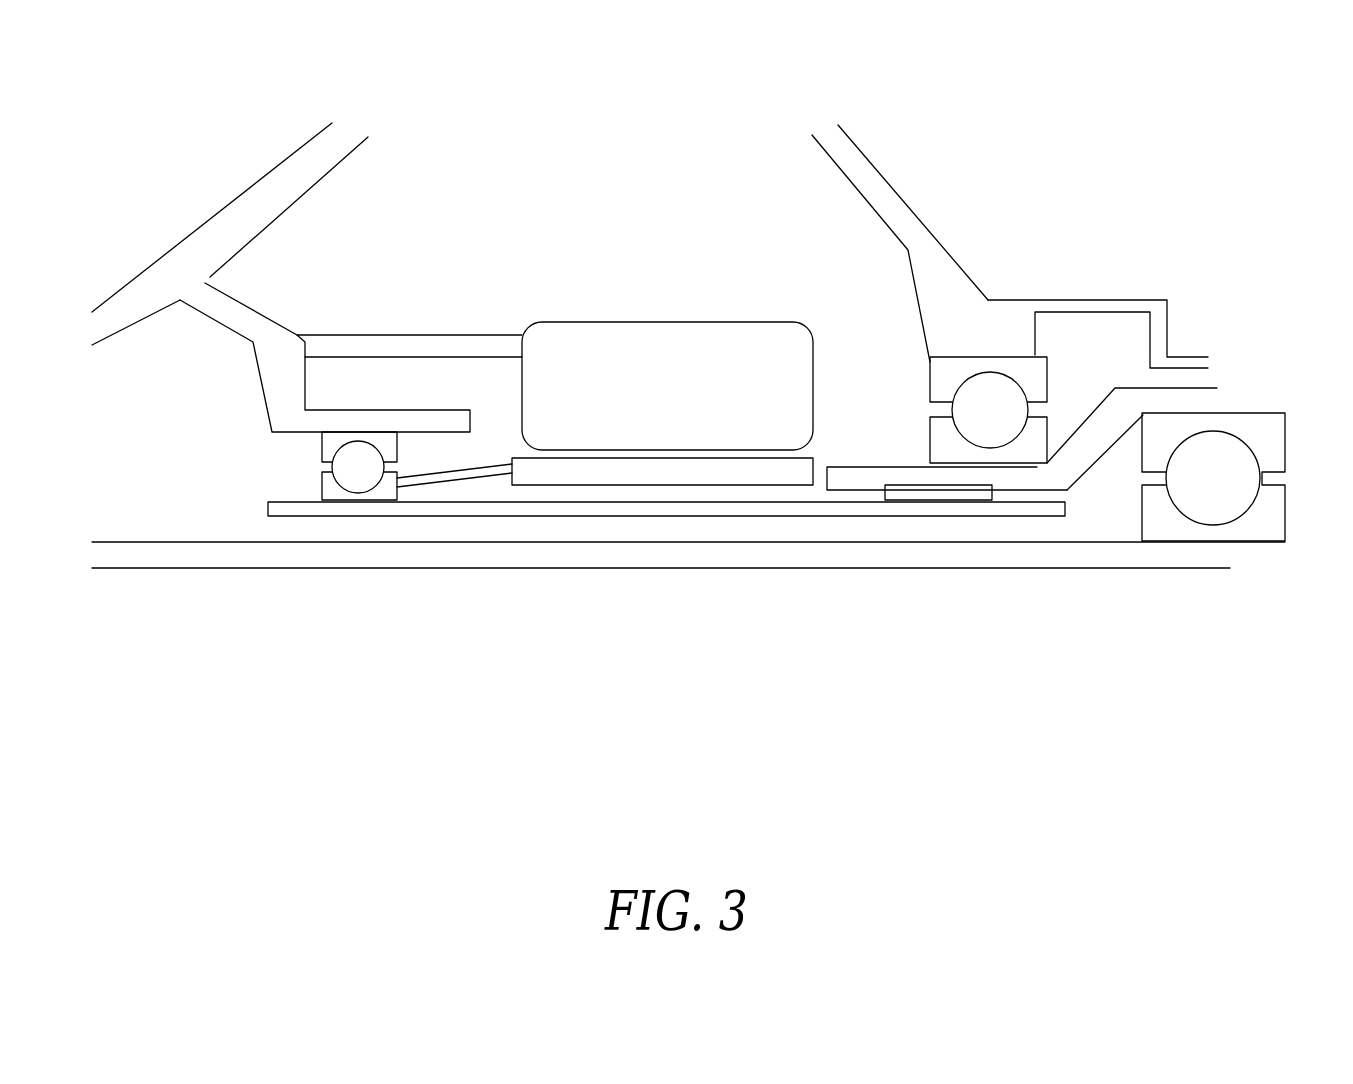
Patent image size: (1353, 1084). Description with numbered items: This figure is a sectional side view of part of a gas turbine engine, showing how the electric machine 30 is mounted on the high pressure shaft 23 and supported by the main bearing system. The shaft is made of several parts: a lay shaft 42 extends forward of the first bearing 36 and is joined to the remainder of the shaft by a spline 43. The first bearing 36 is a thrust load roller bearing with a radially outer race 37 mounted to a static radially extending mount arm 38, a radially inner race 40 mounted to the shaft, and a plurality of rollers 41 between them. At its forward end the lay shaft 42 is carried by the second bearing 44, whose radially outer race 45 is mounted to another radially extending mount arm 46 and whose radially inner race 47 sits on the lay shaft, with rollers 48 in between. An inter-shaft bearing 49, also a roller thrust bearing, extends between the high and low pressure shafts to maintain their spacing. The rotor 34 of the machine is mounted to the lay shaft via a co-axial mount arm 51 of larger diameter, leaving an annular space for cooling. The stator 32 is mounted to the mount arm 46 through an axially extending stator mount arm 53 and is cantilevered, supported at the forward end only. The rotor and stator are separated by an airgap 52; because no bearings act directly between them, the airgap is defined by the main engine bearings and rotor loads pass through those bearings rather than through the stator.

The high pressure shaft 23 is at (1105, 415).
The electric machine 30 is at (578, 294).
The electric machine stator 32 is at (722, 322).
The electric machine rotor 34 is at (737, 487).
The first bearing 36 is at (990, 300).
The radially outer race 37 is at (988, 342).
The radially extending mount arm 38 is at (868, 160).
The radially inner race 40 is at (1015, 462).
The rollers 41 is at (1017, 380).
The lay shaft 42 is at (520, 517).
The spline 43 is at (933, 473).
The second bearing 44 is at (359, 522).
The radially outer race 45 is at (322, 445).
The radially extending mount arm 46 is at (260, 377).
The radially inner race 47 is at (322, 480).
The rollers 48 is at (343, 432).
The inter-shaft bearing 49 is at (1267, 394).
The mount arm 51 is at (450, 480).
The airgap 52 is at (595, 453).
The stator mount arm 53 is at (410, 335).